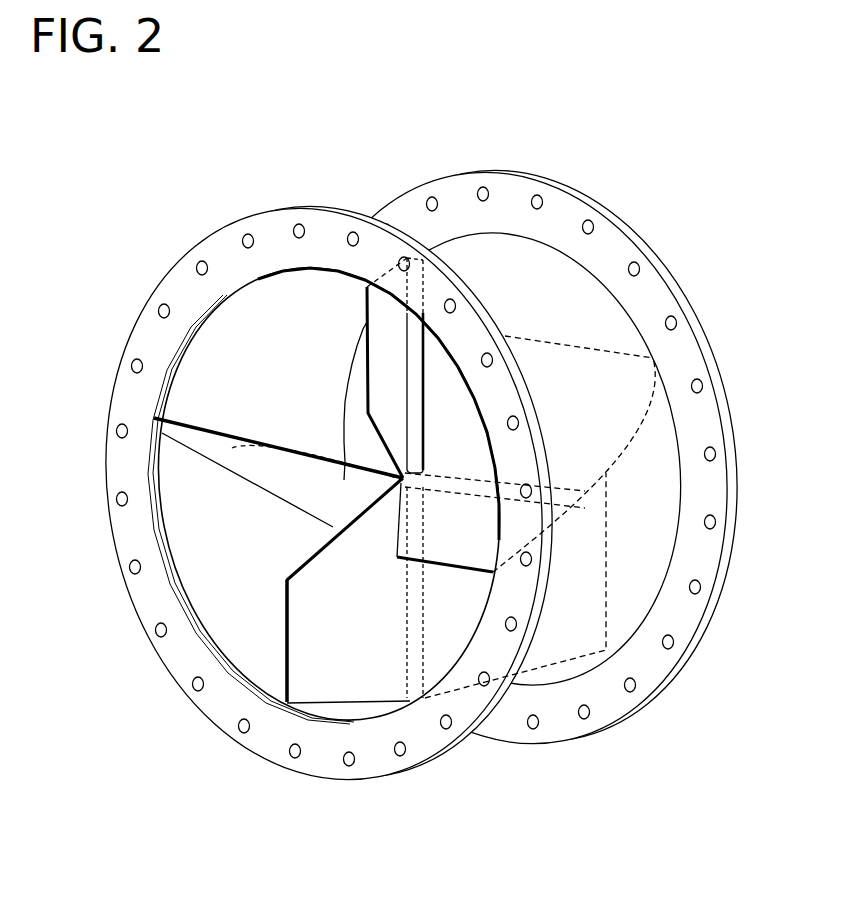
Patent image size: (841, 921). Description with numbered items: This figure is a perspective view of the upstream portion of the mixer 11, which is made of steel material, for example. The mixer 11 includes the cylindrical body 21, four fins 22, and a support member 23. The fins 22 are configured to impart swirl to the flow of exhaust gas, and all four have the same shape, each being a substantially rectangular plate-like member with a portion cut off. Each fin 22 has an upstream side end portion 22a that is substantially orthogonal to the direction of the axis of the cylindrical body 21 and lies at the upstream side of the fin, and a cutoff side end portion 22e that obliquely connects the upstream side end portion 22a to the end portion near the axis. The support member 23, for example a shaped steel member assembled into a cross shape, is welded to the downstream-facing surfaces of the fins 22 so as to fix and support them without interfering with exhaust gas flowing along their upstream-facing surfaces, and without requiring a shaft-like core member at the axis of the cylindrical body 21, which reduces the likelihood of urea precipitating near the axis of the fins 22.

The mixer 11 is at (135, 173).
The cylindrical body 21 is at (533, 260).
The fins 22 is at (350, 680).
The upstream side end portion 22a is at (287, 658).
The cutoff side end portion 22e is at (317, 543).
The support member 23 is at (417, 347).